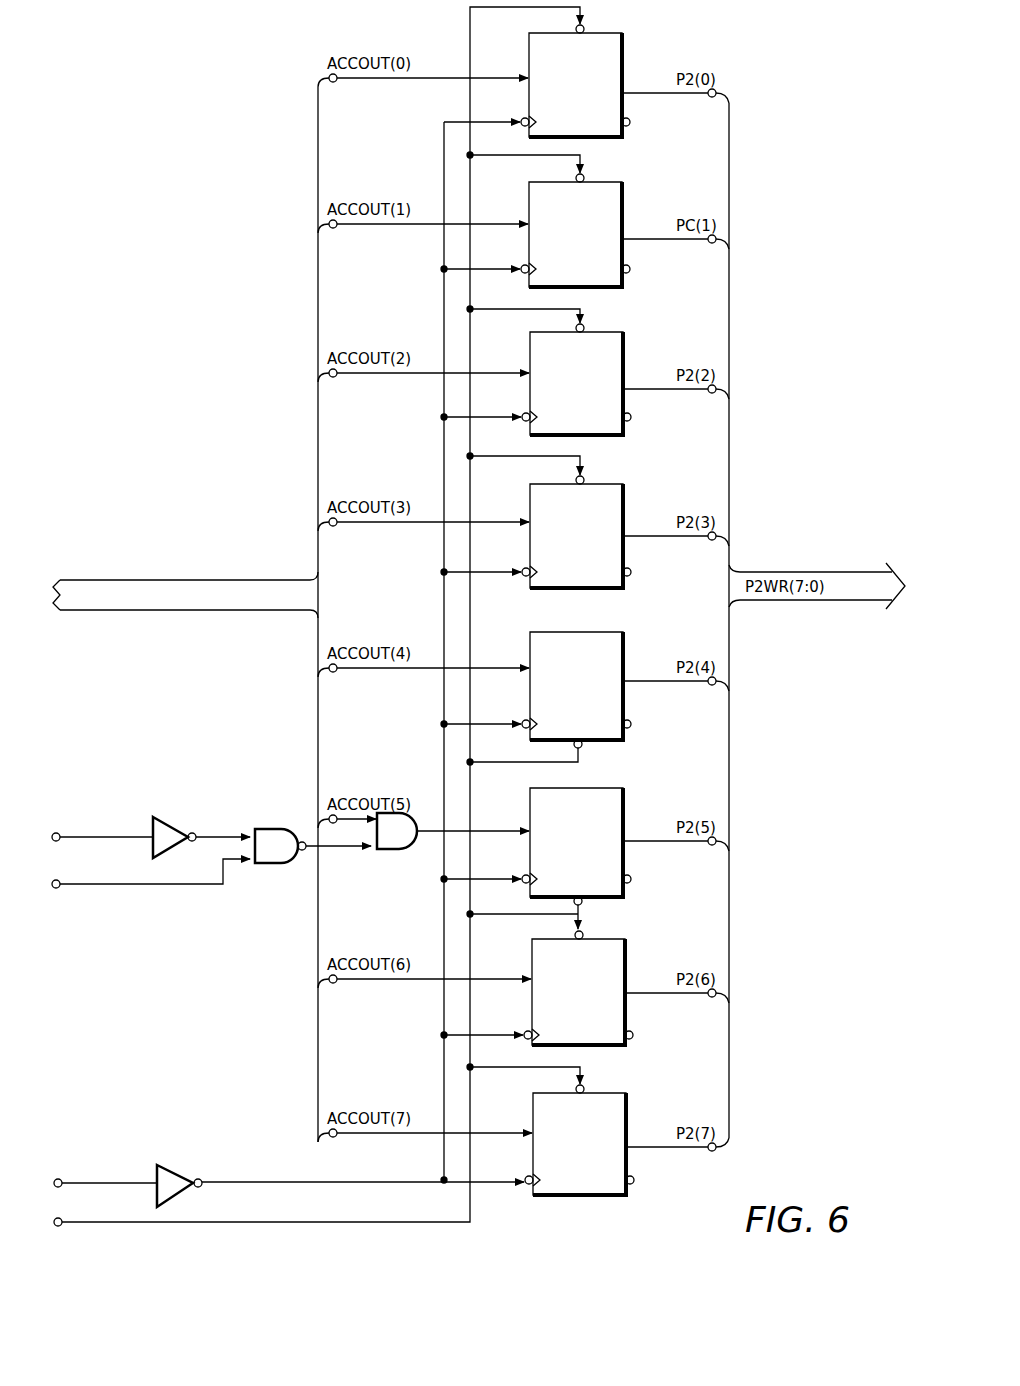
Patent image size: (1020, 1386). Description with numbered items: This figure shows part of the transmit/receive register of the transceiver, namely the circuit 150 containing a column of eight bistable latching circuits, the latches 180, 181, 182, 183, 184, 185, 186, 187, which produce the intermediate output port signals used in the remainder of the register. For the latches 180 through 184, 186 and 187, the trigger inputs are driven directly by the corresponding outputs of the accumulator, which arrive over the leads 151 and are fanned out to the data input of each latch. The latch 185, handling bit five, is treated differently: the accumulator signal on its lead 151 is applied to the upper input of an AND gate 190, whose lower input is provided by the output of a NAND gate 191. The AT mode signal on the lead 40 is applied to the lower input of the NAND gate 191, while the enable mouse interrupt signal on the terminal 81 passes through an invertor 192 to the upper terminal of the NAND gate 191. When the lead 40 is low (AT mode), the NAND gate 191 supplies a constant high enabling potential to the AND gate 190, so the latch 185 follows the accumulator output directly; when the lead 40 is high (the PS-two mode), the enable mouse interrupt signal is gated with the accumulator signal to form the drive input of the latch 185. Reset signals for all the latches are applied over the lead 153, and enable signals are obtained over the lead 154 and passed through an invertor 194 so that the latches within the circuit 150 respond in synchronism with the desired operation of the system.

The circuit 150 is at (252, 456).
The leads 151 is at (214, 610).
The lead 153 is at (118, 1222).
The lead 154 is at (119, 1182).
The bistable latch 180 is at (600, 13).
The bistable latch 181 is at (600, 162).
The bistable latch 182 is at (601, 312).
The bistable latch 183 is at (601, 464).
The bistable latch 184 is at (601, 612).
The bistable latch 185 is at (601, 768).
The bistable latch 186 is at (603, 919).
The bistable latch 187 is at (604, 1073).
The AND gate 190 is at (393, 849).
The NAND gate 191 is at (264, 828).
The invertor 192 is at (167, 816).
The invertor 194 is at (185, 1157).
The terminal 81 is at (128, 836).
The lead 40 is at (104, 886).